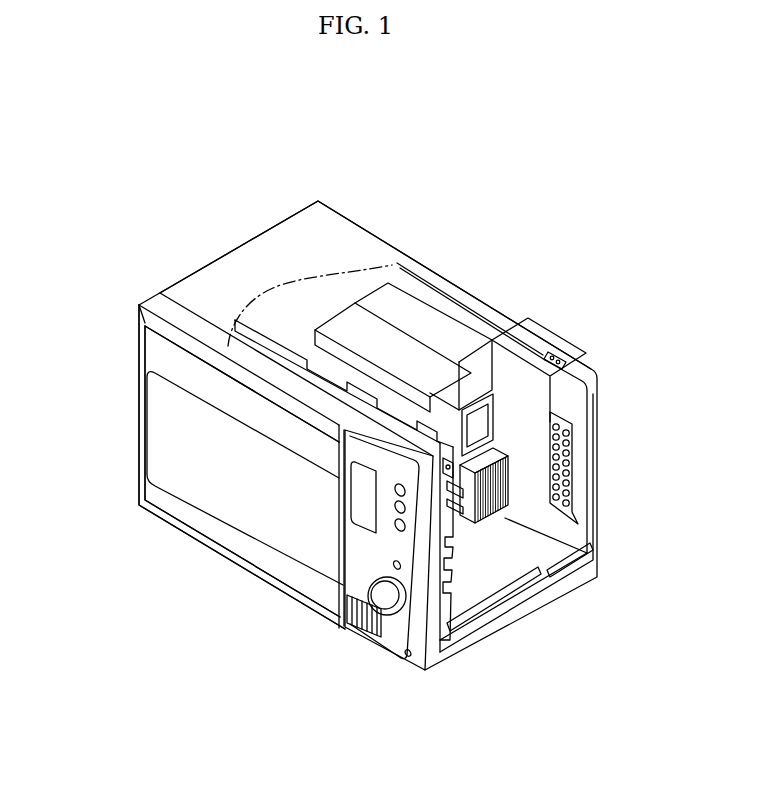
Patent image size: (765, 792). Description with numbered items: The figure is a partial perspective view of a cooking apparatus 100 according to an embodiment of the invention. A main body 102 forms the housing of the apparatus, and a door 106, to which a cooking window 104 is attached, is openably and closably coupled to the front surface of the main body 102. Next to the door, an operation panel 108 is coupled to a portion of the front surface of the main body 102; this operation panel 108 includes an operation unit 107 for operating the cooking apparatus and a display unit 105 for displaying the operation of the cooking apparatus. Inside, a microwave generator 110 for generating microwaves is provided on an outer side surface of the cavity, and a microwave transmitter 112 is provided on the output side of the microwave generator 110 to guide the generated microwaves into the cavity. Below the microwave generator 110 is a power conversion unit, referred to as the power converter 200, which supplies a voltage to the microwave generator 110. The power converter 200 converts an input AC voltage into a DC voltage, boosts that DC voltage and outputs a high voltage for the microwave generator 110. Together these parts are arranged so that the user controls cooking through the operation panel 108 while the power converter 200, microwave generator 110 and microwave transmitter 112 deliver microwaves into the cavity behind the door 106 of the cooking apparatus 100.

The cooking apparatus 100 is at (91, 200).
The main body 102 is at (334, 240).
The cooking window 104 is at (205, 449).
The display unit 105 is at (356, 507).
The door 106 is at (219, 533).
The operation unit 107 is at (384, 597).
The operation panel 108 is at (303, 727).
The microwave generator 110 is at (480, 430).
The microwave transmitter 112 is at (402, 353).
The power converter 200 is at (497, 477).